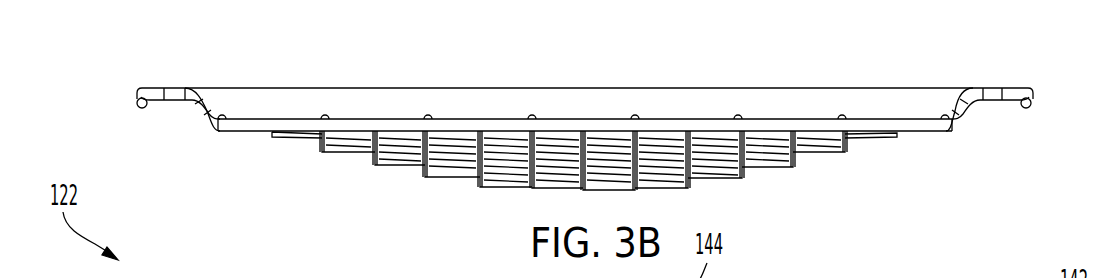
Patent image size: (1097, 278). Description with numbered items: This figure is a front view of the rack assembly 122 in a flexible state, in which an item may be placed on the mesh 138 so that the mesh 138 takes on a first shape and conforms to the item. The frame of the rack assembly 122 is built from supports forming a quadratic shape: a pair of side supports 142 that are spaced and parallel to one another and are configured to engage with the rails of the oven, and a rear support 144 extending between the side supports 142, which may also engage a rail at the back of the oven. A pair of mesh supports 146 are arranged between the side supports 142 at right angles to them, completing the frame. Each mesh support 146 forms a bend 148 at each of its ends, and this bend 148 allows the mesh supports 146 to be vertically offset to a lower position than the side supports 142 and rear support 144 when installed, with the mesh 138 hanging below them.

The rack assembly 122 is at (128, 77).
The mesh 138 is at (435, 178).
The side supports 142 is at (1019, 97).
The rear support 144 is at (673, 88).
The mesh supports 146 is at (257, 133).
The bend 148 is at (975, 105).